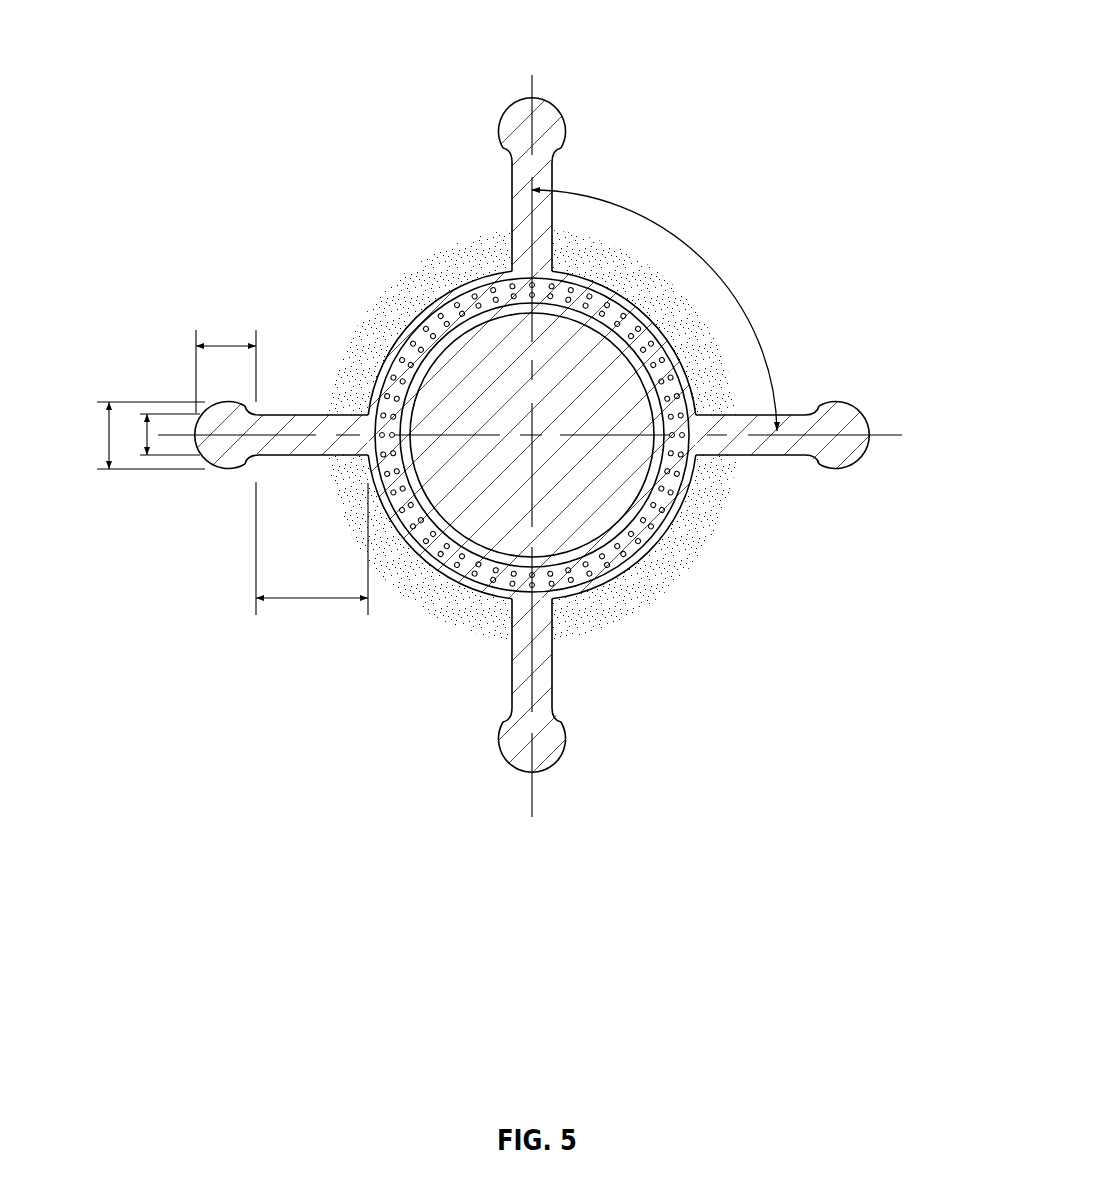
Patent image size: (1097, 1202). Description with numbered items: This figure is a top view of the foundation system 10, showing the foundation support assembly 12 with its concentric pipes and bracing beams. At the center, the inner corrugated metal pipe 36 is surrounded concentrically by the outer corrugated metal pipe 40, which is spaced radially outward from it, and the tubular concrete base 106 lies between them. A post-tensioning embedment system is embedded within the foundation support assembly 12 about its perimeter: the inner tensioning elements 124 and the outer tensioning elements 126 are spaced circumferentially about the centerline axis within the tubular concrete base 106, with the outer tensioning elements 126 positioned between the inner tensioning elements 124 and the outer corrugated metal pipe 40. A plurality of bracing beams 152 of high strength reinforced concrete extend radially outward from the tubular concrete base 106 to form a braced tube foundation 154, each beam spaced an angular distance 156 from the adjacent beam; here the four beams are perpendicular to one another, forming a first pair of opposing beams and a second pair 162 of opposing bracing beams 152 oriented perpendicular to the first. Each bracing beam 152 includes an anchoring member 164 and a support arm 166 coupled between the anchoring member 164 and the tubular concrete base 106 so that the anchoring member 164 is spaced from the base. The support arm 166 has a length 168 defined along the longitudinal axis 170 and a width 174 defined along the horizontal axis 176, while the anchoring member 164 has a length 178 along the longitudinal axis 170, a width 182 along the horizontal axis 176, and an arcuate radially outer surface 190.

The foundation system 10 is at (548, 433).
The foundation support assembly 12 is at (260, 194).
The inner corrugated metal pipe 36 is at (532, 435).
The outer corrugated metal pipe 40 is at (473, 591).
The tubular concrete base 106 is at (532, 435).
The inner tensioning elements 124 is at (575, 435).
The outer tensioning elements 126 is at (575, 435).
The bracing beams 152 is at (532, 420).
The braced tube foundation 154 is at (796, 320).
The angular distance 156 is at (655, 309).
The second pair of opposing bracing beams 162 is at (873, 492).
The anchoring member 164 is at (191, 492).
The support arm 166 is at (306, 470).
The length of support arm 168 is at (312, 570).
The longitudinal axis 170 is at (893, 435).
The width of support arm 174 is at (147, 416).
The horizontal axis 176 is at (574, 463).
The length of anchoring member 178 is at (226, 341).
The width of anchoring member 182 is at (125, 433).
The arcuate radially outer surface 190 is at (191, 492).